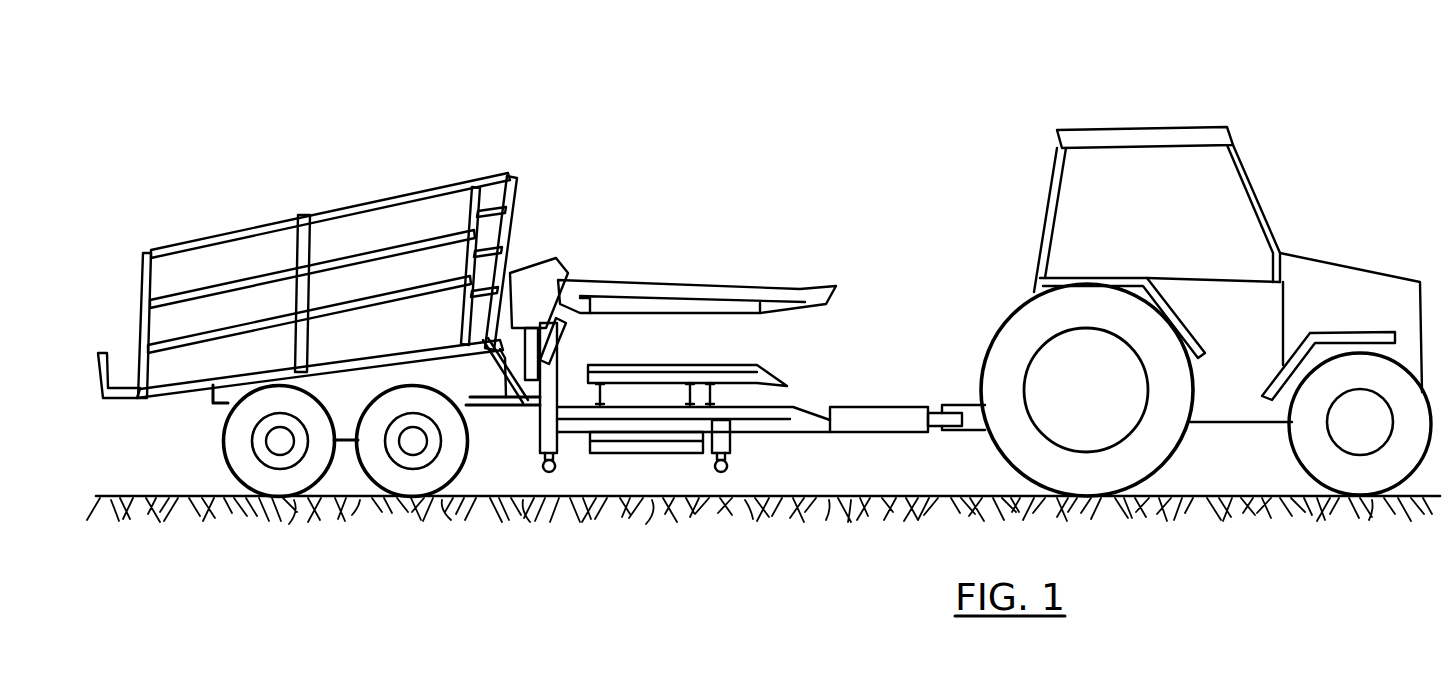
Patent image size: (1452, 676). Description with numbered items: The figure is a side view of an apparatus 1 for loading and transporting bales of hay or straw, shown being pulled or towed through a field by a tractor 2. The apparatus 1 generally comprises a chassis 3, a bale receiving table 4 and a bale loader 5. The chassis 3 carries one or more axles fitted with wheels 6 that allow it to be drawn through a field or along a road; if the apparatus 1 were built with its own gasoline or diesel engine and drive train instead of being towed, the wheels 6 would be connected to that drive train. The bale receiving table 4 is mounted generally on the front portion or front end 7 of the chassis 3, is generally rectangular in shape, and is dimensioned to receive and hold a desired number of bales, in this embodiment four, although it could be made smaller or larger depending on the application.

The apparatus 1 is at (337, 190).
The tractor 2 is at (1146, 130).
The chassis 3 is at (520, 418).
The bale receiving table 4 is at (781, 409).
The bale loader 5 is at (694, 290).
The wheels 6 is at (224, 461).
The front end 7 is at (890, 404).